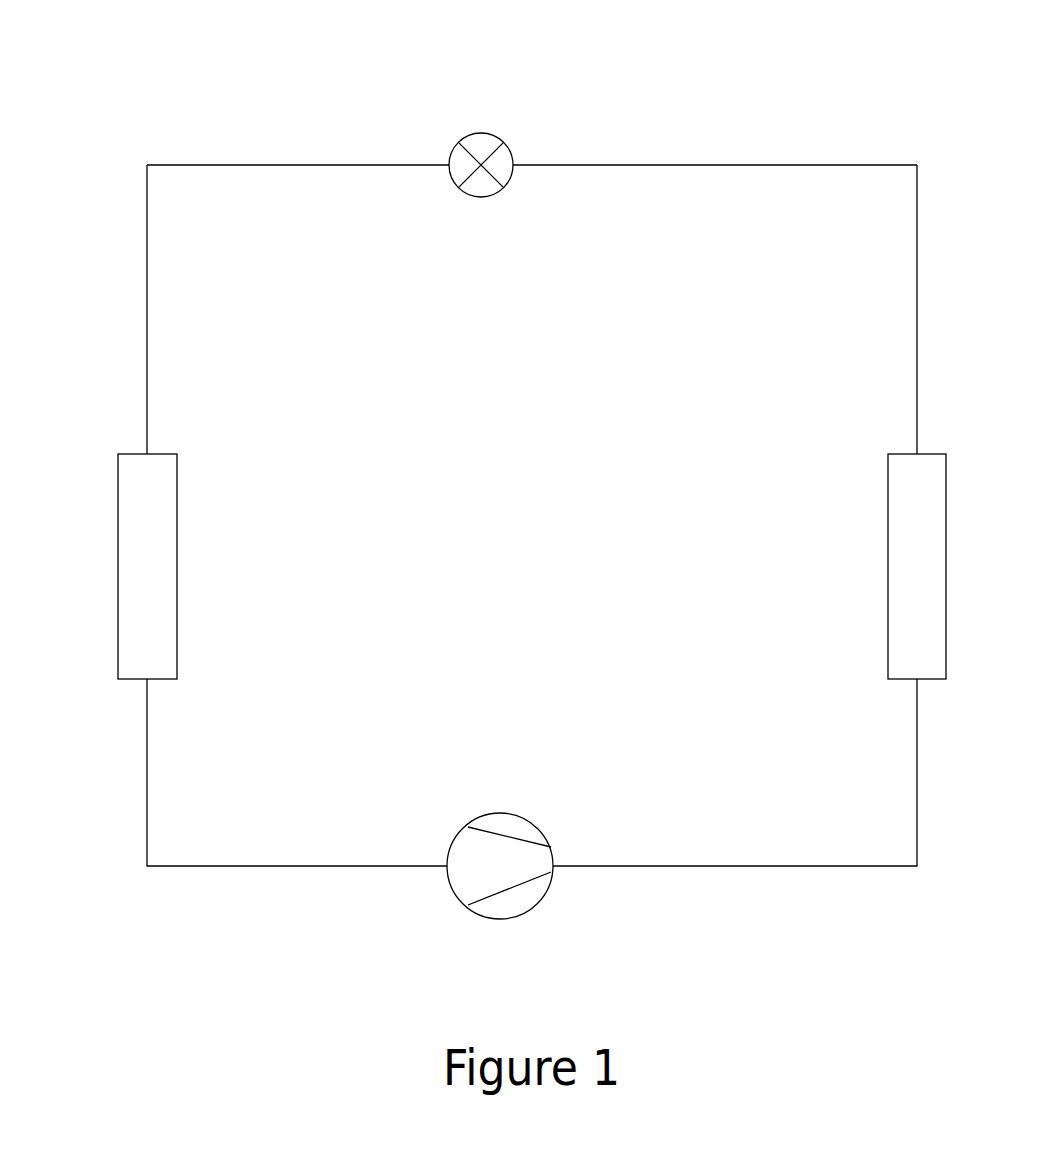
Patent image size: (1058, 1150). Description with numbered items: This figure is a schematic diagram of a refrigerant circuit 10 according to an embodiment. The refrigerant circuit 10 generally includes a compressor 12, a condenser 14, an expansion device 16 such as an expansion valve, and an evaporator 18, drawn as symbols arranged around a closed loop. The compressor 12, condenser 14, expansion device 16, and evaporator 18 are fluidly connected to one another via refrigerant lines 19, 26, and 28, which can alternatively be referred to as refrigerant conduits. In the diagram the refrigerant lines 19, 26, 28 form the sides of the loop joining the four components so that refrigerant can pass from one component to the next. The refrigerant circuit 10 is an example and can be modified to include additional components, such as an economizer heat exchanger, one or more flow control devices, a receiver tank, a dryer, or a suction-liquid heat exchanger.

The refrigerant circuit 10 is at (92, 95).
The compressor 12 is at (498, 809).
The condenser 14 is at (884, 563).
The expansion device 16 is at (480, 200).
The evaporator 18 is at (181, 566).
The refrigerant line 19 is at (697, 866).
The refrigerant line 26 is at (247, 165).
The refrigerant line 28 is at (247, 866).